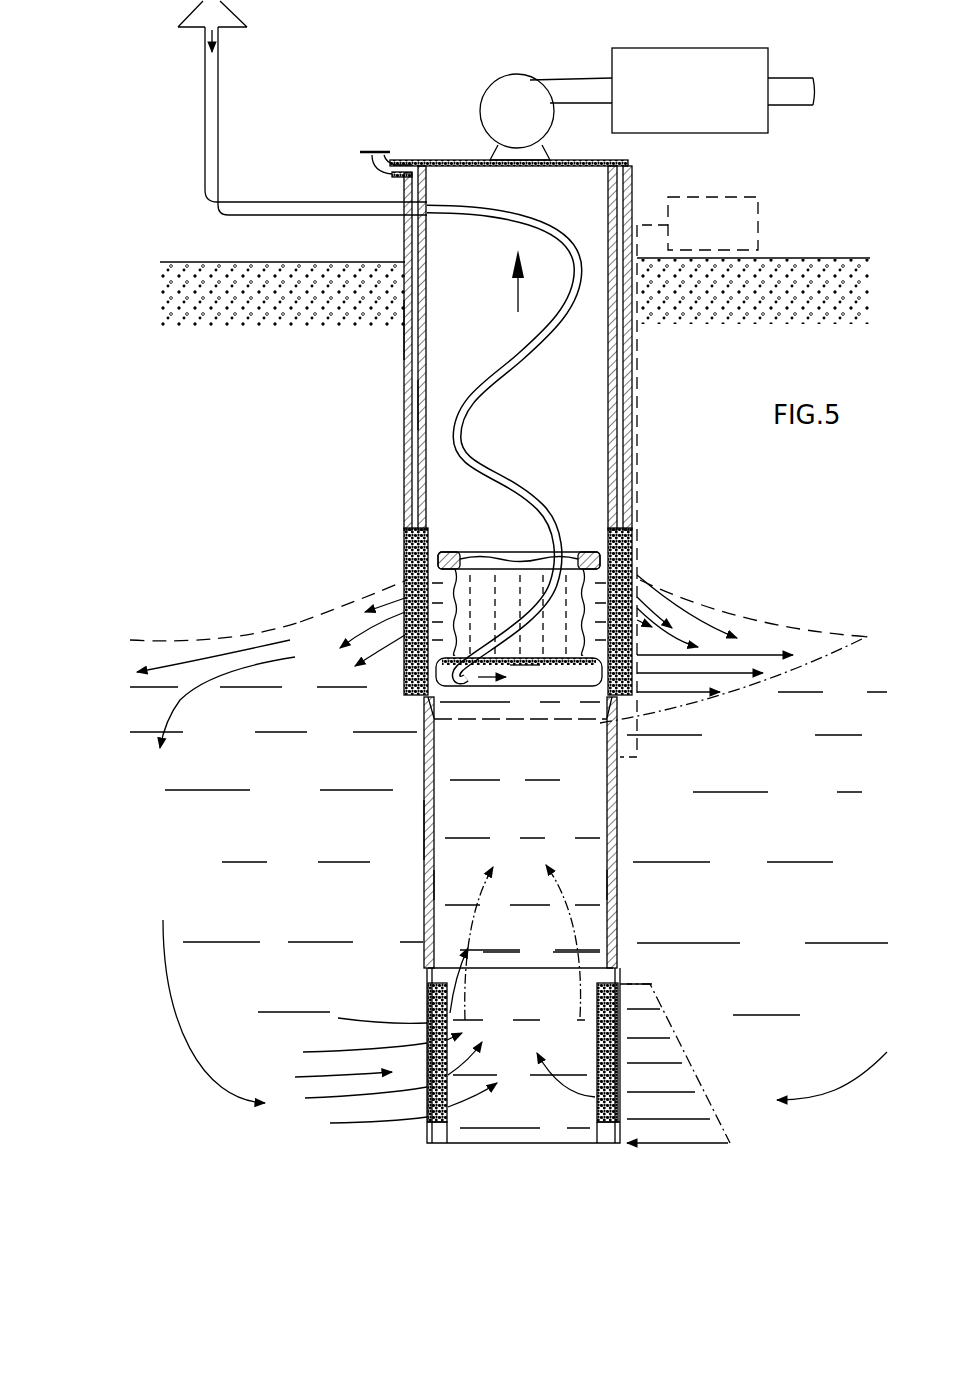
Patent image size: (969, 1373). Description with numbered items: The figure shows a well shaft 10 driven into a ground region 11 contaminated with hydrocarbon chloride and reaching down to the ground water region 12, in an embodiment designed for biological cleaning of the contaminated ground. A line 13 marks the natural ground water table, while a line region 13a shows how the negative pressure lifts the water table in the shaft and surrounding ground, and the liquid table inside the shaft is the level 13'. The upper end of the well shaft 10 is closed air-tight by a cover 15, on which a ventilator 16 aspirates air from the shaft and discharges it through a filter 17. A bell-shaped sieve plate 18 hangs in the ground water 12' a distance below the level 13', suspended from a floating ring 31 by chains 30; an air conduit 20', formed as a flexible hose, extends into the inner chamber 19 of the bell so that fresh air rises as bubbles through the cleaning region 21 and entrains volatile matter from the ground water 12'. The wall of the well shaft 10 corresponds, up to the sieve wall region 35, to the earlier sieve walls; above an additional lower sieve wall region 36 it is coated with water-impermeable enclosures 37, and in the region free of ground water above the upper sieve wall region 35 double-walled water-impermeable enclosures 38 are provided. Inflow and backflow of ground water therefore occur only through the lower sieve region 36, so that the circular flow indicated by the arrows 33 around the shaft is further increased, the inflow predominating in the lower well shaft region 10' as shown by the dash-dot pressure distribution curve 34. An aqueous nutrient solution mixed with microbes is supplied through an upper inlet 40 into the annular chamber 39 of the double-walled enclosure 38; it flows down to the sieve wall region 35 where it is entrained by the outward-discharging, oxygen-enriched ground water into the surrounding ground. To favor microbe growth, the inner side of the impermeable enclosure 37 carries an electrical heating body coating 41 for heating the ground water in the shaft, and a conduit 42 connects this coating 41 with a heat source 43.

The well shaft 10 is at (540, 348).
The lower well shaft region 10' is at (548, 920).
The ground region 11 is at (296, 385).
The ground water region 12 is at (509, 851).
The ground water 12' is at (523, 996).
The ground water table 13 is at (215, 615).
The ground water table inside the well shaft 13' is at (519, 532).
The lifted ground water table line region 13a is at (262, 625).
The cover 15 is at (452, 160).
The ventilator 16 is at (498, 103).
The filter 17 is at (713, 113).
The bell-shaped sieve plate 18 is at (555, 664).
The inner chamber 19 is at (532, 678).
The air conduit 20' is at (507, 444).
The cleaning region 21 is at (410, 665).
The chains 30 is at (600, 583).
The floating ring 31 is at (598, 554).
The arrow 33 is at (358, 632).
The pressure distribution curve 34 is at (757, 687).
The upper sieve wall region 35 is at (408, 572).
The lower sieve wall region 36 is at (432, 1000).
The water-impermeable enclosures 37 is at (427, 833).
The double-walled water-impermeable enclosures 38 is at (408, 340).
The annular chamber 39 is at (418, 410).
The upper inlet 40 is at (362, 166).
The electrical heating body coating 41 is at (427, 883).
The conduit 42 is at (638, 375).
The heat source 43 is at (760, 226).